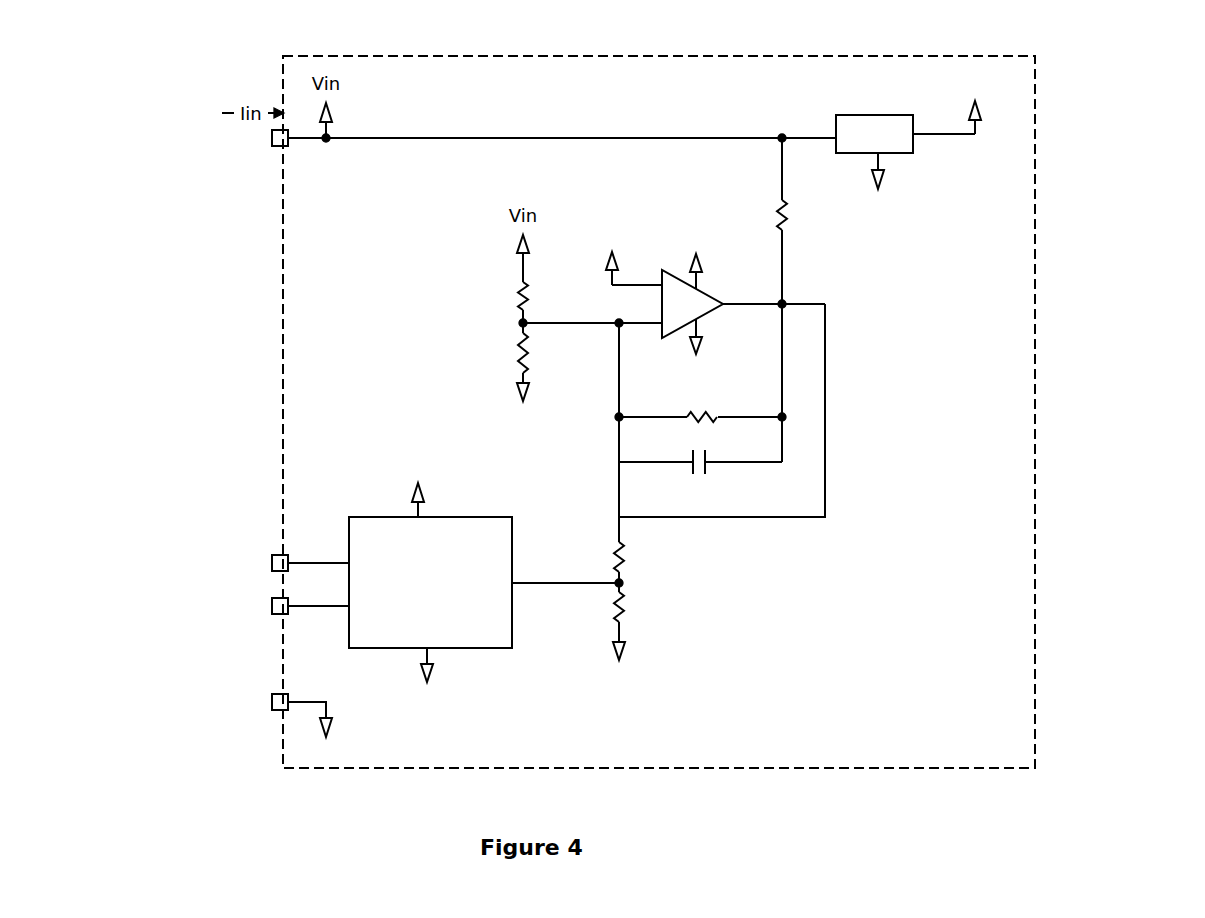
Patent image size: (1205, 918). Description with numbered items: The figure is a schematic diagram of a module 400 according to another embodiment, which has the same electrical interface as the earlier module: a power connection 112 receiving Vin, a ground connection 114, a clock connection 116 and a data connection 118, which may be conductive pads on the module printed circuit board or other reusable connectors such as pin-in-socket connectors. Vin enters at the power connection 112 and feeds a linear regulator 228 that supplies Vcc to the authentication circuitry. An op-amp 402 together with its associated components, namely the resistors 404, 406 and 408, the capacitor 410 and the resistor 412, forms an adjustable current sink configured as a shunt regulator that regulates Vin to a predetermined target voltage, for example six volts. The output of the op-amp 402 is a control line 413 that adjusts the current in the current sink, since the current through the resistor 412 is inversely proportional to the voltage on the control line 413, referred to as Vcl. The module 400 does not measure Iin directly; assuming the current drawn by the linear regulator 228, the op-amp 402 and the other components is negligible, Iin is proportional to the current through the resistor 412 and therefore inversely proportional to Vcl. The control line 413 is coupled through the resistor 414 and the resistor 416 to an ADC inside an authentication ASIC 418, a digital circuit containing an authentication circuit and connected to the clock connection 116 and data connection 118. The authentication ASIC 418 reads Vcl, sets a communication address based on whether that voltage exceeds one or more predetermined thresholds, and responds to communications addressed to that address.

The module 400 is at (1090, 121).
The power connection 112 is at (278, 148).
The ground connection 114 is at (273, 695).
The clock connection 116 is at (288, 555).
The data connection 118 is at (288, 612).
The linear regulator 228 is at (872, 115).
The op-amp 402 is at (701, 297).
The resistor 404 is at (512, 292).
The resistor 406 is at (512, 355).
The resistor 408 is at (696, 410).
The capacitor 410 is at (691, 472).
The resistor 412 is at (786, 205).
The control line 413 is at (825, 456).
The resistor 414 is at (609, 552).
The resistor 416 is at (627, 614).
The authentication ASIC 418 is at (472, 648).